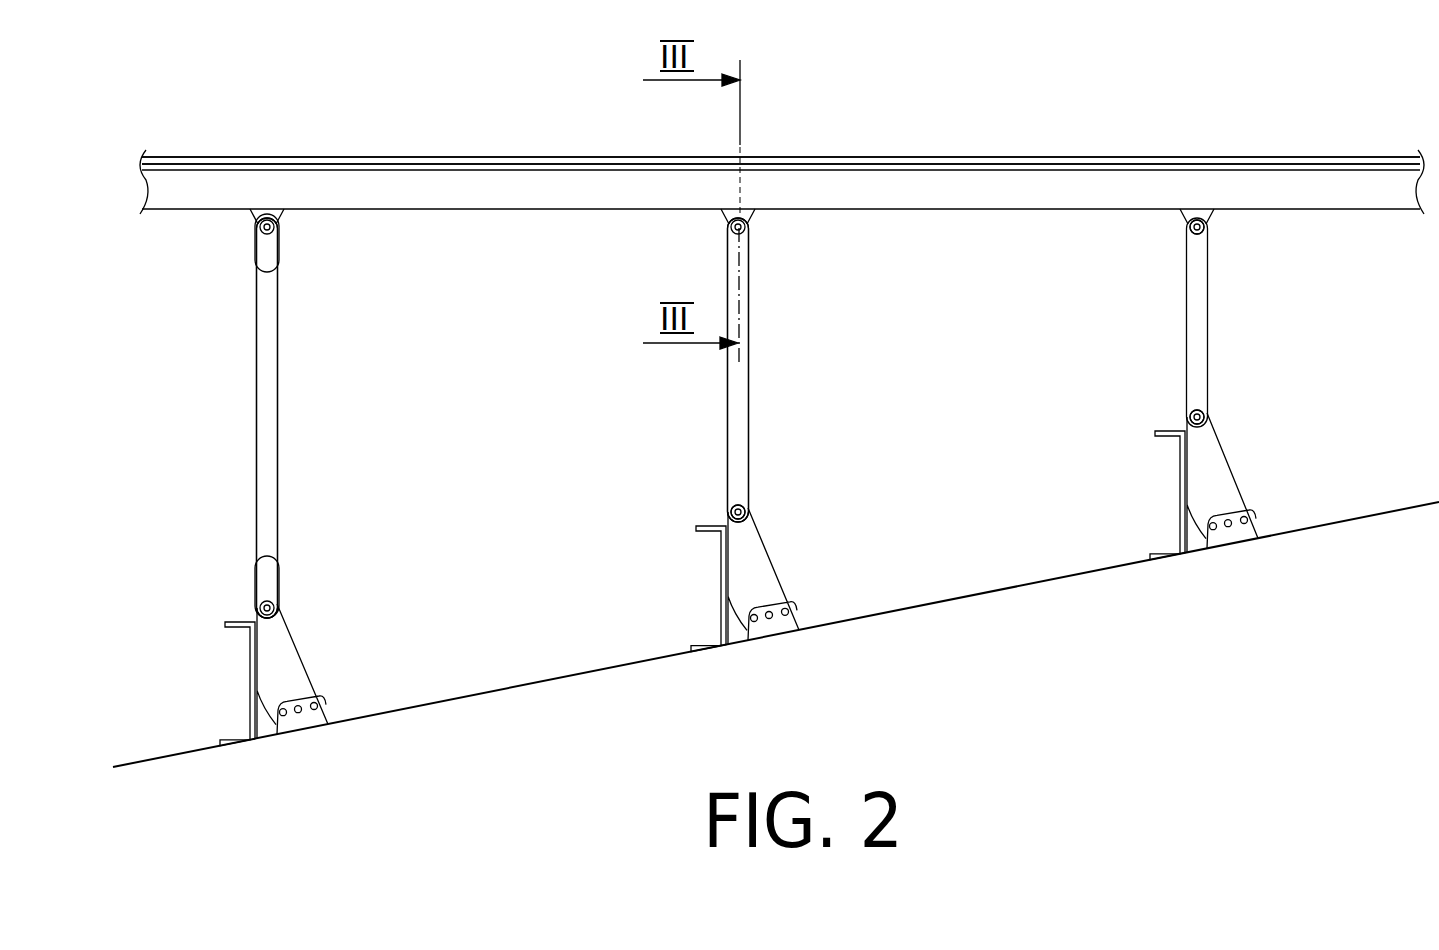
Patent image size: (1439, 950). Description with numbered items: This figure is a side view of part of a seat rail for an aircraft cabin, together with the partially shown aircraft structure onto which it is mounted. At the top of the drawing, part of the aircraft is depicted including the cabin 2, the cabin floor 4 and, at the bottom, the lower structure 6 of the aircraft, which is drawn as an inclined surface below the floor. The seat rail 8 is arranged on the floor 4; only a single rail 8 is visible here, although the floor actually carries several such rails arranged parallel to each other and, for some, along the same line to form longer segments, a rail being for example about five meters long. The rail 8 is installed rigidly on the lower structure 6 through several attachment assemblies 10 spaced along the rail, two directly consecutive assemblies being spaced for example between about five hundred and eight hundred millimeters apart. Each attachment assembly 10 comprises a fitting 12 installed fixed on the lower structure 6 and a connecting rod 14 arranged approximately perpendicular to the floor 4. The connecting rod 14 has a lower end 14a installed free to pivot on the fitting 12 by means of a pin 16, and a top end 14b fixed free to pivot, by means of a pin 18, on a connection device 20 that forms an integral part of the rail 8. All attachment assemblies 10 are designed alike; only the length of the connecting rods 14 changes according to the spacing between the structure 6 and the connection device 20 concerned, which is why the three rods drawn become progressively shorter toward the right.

The cabin 2 is at (548, 130).
The cabin floor 4 is at (408, 170).
The lower structure 6 is at (1078, 575).
The seat rail 8 is at (1045, 142).
The attachment assembly 10 is at (284, 447).
The fitting 12 is at (295, 680).
The connecting rod 14 is at (276, 405).
The lower end 14a is at (276, 556).
The top end 14b is at (276, 290).
The pin 16 is at (260, 607).
The pin 18 is at (260, 227).
The connection device 20 is at (266, 212).